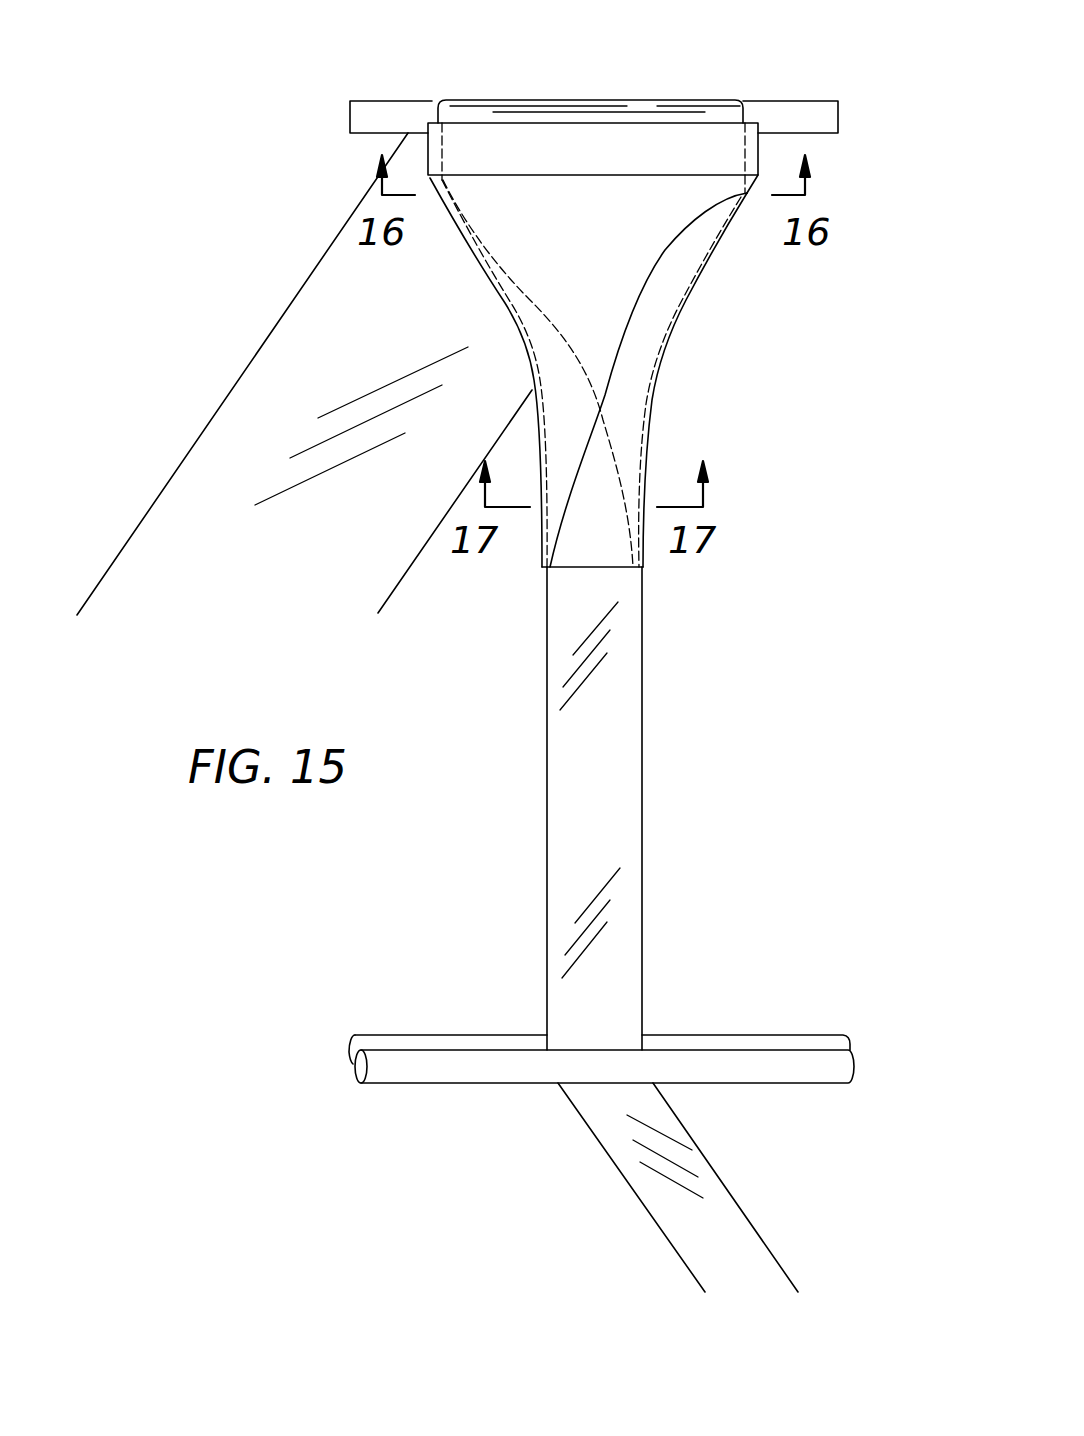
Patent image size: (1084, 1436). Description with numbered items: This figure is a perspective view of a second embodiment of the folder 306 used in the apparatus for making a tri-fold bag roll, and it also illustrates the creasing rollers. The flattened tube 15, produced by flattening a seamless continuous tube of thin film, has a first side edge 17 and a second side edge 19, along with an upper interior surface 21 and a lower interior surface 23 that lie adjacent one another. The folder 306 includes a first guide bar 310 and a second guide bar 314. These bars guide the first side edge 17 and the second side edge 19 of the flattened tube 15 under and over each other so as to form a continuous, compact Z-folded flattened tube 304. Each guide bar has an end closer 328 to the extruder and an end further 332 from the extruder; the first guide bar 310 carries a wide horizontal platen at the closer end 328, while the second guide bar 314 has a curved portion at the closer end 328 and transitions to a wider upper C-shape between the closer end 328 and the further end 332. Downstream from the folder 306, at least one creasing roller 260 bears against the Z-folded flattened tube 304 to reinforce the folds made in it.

The flattened tube 15 is at (200, 498).
The first side edge 17 is at (210, 422).
The second side edge 19 is at (418, 557).
The upper interior surface 21 is at (298, 292).
The lower interior surface 23 is at (273, 378).
The creasing roller 260 is at (378, 1037).
The Z-folded flattened tube 304 is at (623, 677).
The folder 306 is at (669, 424).
The first guide bar 310 is at (567, 433).
The second guide bar 314 is at (630, 403).
The end closer to the extruder 328 is at (543, 125).
The end further from the extruder 332 is at (595, 572).